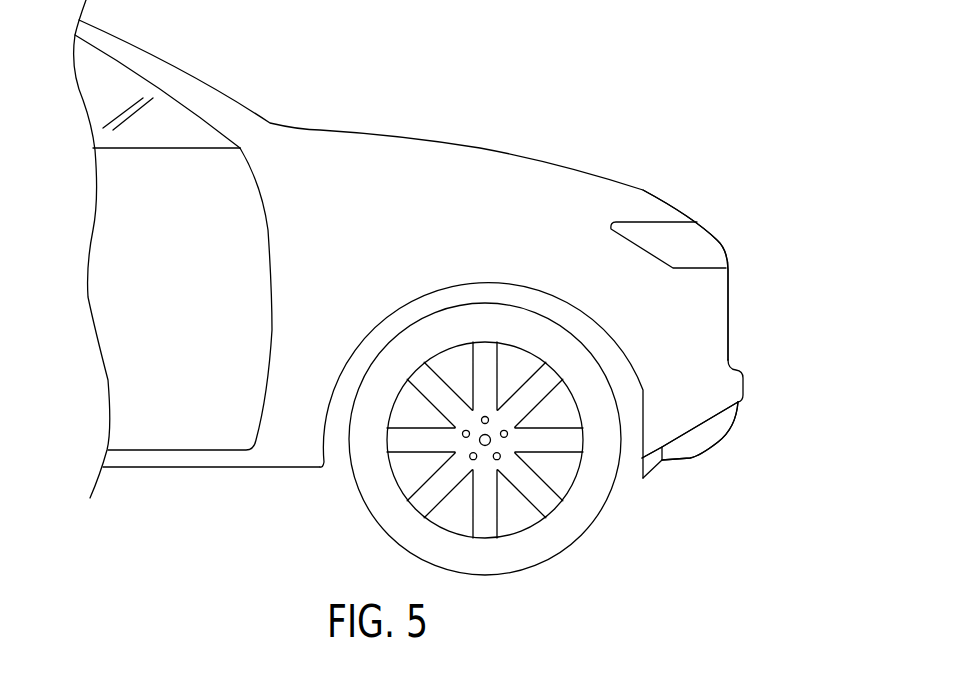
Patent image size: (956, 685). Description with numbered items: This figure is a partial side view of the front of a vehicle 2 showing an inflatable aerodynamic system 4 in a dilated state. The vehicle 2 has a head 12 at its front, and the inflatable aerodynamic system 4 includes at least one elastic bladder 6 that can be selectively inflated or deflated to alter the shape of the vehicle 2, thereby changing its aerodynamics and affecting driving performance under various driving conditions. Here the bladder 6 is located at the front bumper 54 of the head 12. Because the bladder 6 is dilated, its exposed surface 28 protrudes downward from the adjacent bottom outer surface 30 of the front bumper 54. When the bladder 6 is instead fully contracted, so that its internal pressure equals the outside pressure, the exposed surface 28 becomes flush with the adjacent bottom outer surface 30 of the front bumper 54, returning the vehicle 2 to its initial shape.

The vehicle 2 is at (530, 101).
The head 12 is at (757, 224).
The front bumper 54 is at (745, 383).
The elastic bladder 6 is at (732, 418).
The inflatable aerodynamic system 4 is at (747, 447).
The exposed surface 28 is at (694, 464).
The adjacent outer surface 30 is at (654, 475).